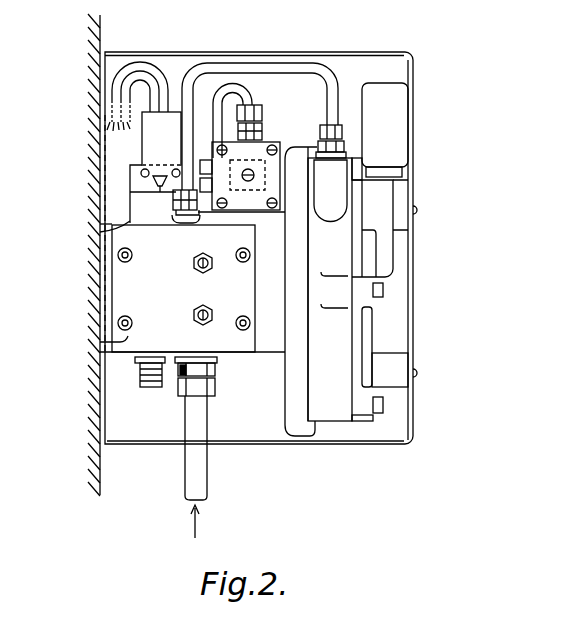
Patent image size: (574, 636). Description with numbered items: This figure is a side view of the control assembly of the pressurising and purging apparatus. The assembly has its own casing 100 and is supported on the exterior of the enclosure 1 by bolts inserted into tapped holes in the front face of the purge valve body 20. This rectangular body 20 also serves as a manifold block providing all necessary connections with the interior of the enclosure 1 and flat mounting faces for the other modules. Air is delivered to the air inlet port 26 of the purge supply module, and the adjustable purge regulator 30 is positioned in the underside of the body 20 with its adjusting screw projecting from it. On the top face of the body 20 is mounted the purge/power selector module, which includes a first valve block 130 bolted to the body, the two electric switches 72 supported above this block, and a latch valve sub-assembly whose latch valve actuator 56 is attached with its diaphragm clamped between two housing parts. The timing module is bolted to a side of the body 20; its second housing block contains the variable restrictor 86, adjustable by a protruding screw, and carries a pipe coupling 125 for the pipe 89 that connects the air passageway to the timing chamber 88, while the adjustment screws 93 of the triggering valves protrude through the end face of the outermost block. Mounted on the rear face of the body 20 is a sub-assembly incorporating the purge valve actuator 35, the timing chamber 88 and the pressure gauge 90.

The enclosure 1 is at (98, 462).
The casing 100 is at (388, 52).
The pipe 89 is at (320, 73).
The latch valve actuator 56 is at (261, 147).
The pressure gauge 90 is at (398, 107).
The electric switches 72 is at (148, 143).
The first valve block 130 is at (135, 205).
The pipe coupling 125 is at (100, 232).
The body 20 is at (100, 342).
The adjustment screws 93 is at (196, 307).
The adjustable purge regulator 30 is at (138, 386).
The variable restrictor 86 is at (177, 378).
The air inlet port 26 is at (199, 384).
The purge valve actuator 35 is at (302, 424).
The timing chamber 88 is at (333, 410).